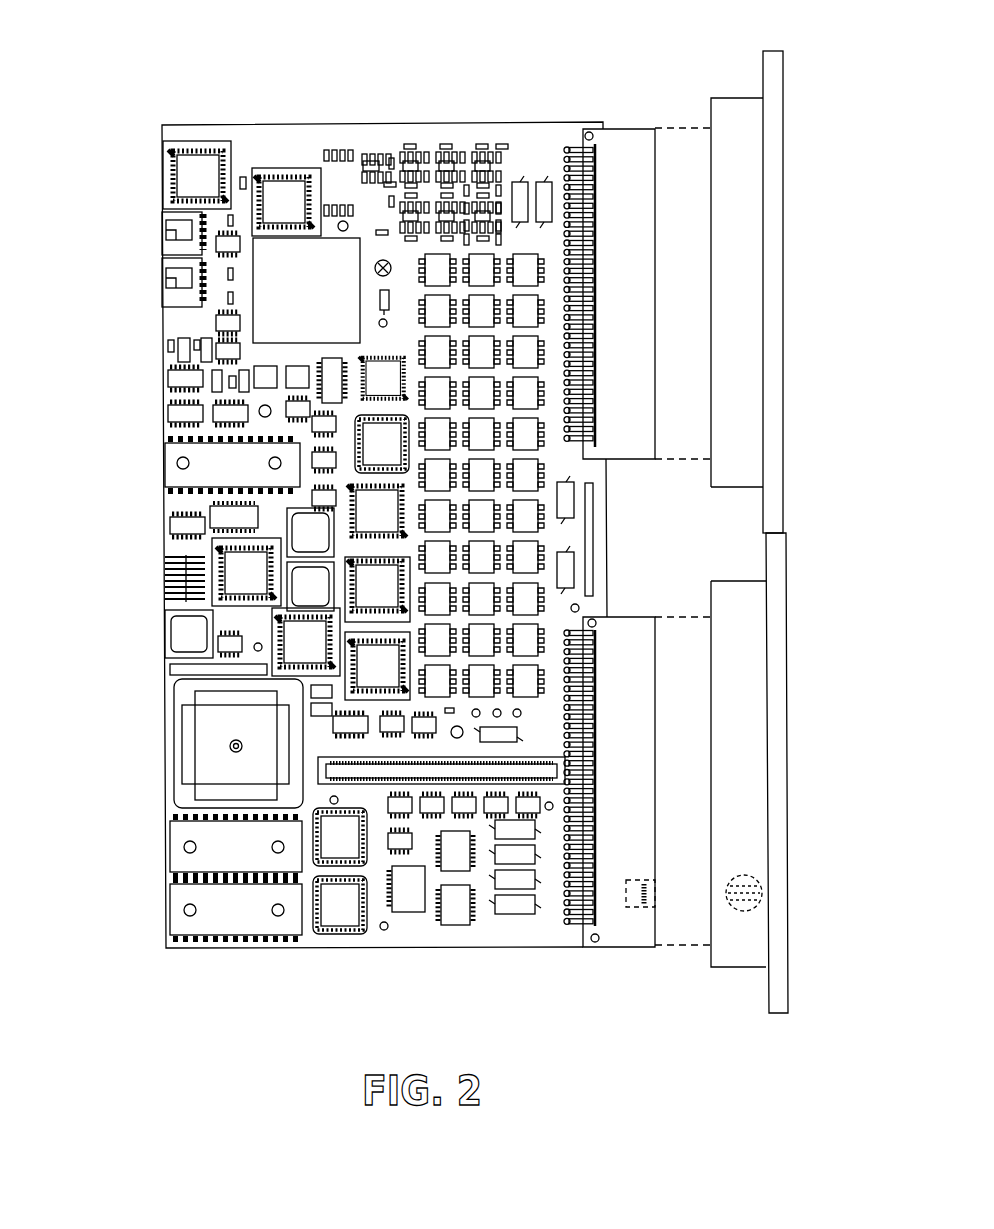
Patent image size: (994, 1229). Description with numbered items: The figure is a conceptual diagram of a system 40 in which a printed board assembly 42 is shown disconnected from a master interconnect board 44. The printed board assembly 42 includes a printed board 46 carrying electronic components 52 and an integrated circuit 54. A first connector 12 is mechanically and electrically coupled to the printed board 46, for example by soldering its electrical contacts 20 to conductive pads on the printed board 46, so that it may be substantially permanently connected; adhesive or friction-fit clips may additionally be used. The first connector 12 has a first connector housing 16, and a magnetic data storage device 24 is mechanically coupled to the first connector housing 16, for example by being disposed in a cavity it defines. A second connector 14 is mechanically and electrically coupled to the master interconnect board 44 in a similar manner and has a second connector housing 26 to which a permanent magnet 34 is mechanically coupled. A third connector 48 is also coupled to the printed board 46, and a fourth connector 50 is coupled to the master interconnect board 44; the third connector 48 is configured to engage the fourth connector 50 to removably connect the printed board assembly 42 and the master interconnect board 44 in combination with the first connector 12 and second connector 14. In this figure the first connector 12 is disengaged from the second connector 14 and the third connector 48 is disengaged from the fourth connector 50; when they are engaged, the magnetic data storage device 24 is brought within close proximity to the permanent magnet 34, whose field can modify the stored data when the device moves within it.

The first connector 12 is at (624, 957).
The second connector 14 is at (744, 976).
The first connector housing 16 is at (620, 925).
The electrical contacts 20 is at (570, 905).
The magnetic data storage device 24 is at (638, 907).
The second connector housing 26 is at (760, 945).
The permanent magnet 34 is at (758, 880).
The system 40 is at (120, 60).
The printed board assembly 42 is at (247, 954).
The master interconnect board 44 is at (778, 630).
The printed board 46 is at (407, 937).
The third connector 48 is at (577, 124).
The fourth connector 50 is at (704, 96).
The electronic components 52 is at (238, 581).
The integrated circuit 54 is at (212, 743).